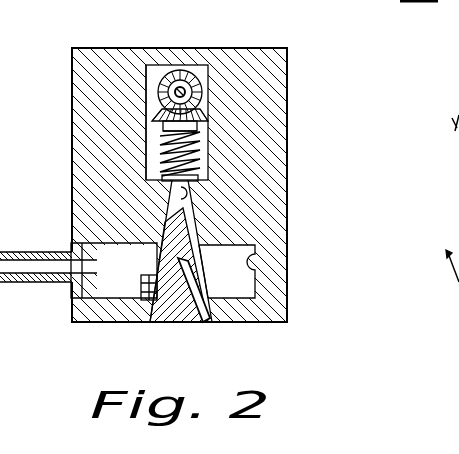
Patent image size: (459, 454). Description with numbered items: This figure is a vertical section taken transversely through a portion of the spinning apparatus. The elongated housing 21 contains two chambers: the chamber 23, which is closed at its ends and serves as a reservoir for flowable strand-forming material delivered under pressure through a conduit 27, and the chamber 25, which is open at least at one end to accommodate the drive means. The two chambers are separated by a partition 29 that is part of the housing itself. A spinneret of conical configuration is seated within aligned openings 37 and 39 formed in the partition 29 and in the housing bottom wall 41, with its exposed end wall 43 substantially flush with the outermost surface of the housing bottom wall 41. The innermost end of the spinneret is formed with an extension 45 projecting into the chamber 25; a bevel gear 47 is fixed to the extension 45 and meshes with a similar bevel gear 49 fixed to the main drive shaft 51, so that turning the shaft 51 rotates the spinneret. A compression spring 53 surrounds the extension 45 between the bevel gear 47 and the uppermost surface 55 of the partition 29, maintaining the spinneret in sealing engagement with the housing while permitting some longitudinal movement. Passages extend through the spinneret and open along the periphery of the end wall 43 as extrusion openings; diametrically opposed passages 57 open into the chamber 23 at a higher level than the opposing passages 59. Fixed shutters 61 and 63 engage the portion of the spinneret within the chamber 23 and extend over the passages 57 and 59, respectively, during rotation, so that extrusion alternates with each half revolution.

The elongated housing 21 is at (290, 148).
The chamber 23 is at (252, 255).
The chamber 25 is at (154, 66).
The conduit 27 is at (25, 284).
The partition 29 is at (150, 195).
The opening 37 is at (192, 200).
The opening 39 is at (159, 321).
The housing bottom wall 41 is at (247, 323).
The end wall 43 is at (183, 323).
The extension 45 is at (197, 137).
The bevel gear 47 is at (182, 150).
The bevel gear 49 is at (190, 82).
The main drive shaft 51 is at (180, 88).
The compression spring 53 is at (148, 158).
The uppermost surface 55 is at (199, 176).
The passage 57 is at (210, 283).
The passage 59 is at (150, 294).
The fixed shutter 61 is at (204, 264).
The fixed shutter 63 is at (148, 280).